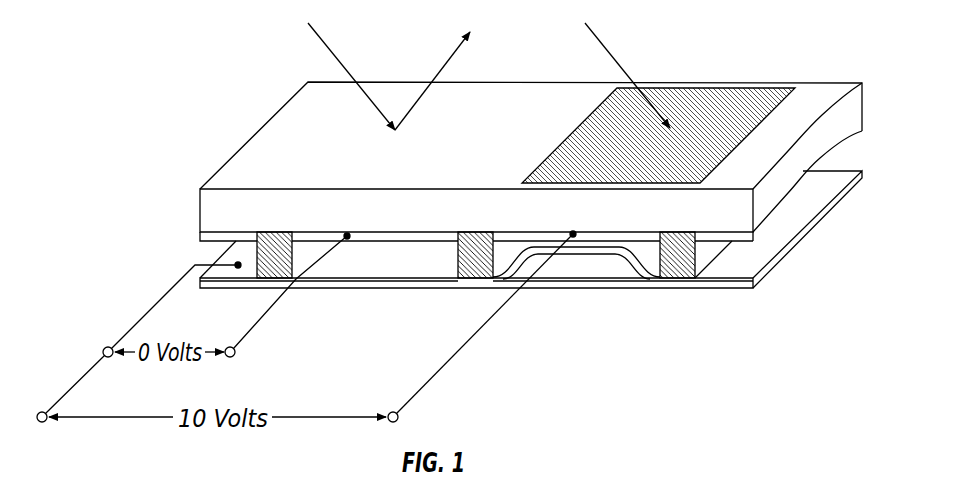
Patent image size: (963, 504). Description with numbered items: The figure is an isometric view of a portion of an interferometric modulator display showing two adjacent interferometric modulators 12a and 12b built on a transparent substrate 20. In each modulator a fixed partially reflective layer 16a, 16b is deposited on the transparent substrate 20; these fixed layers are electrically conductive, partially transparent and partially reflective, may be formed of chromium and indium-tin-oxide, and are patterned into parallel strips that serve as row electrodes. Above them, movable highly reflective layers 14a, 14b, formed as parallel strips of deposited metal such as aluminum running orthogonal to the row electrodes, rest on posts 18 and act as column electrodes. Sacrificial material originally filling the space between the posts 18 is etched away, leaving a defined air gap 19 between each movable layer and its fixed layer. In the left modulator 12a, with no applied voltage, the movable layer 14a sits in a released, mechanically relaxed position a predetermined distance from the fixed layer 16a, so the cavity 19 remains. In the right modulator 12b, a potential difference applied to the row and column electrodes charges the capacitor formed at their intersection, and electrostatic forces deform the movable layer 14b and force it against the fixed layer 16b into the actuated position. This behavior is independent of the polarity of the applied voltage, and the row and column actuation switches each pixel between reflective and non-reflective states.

The interferometric modulator 12a is at (302, 147).
The interferometric modulator 12b is at (720, 110).
The movable highly reflective layer 14a is at (308, 283).
The movable highly reflective layer 14b is at (522, 262).
The fixed partially reflective layer 16a is at (378, 282).
The fixed partially reflective layer 16b is at (549, 236).
The posts 18 is at (277, 270).
The air gap 19 is at (412, 260).
The transparent substrate 20 is at (795, 153).